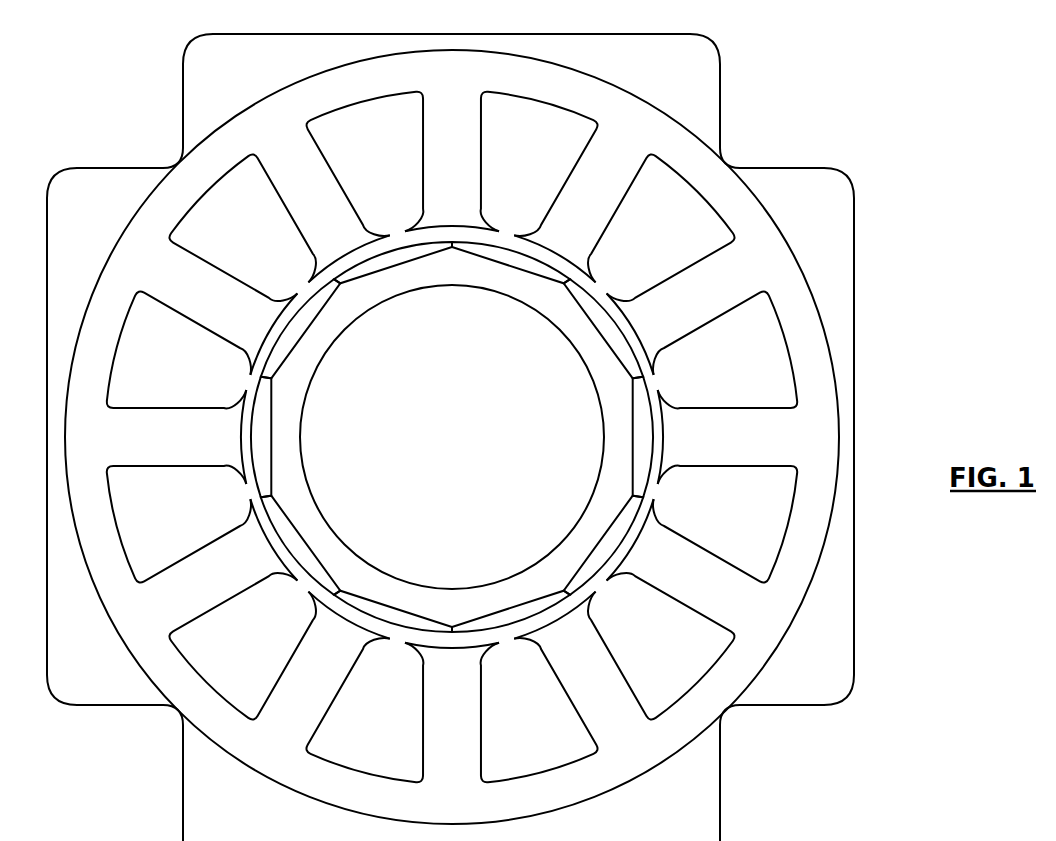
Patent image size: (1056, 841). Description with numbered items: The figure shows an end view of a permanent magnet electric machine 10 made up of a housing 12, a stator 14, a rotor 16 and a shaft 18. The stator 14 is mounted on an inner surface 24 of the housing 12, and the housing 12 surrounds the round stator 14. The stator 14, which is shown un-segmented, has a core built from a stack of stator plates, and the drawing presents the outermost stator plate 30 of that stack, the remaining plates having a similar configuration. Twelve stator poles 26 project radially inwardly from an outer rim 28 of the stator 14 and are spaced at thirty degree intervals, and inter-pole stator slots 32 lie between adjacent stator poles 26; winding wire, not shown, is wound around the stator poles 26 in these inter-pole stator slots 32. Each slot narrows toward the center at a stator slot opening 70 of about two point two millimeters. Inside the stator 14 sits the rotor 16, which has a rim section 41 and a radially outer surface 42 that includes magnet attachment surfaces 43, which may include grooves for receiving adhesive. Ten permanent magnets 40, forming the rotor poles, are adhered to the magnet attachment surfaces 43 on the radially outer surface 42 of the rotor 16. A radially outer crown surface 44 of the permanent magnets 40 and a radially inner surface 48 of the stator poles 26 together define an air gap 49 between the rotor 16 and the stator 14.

The electric machine 10 is at (806, 89).
The housing 12 is at (796, 227).
The stator 14 is at (632, 120).
The rotor 16 is at (490, 283).
The shaft 18 is at (434, 446).
The inner surface 24 is at (253, 107).
The stator poles 26 is at (443, 161).
The outer rim 28 is at (376, 82).
The outermost stator plate 30 is at (828, 415).
The inter-pole stator slots 32 is at (368, 164).
The permanent magnets 40 is at (380, 262).
The rim section 41 is at (606, 404).
The radially outer surface 42 is at (455, 245).
The magnet attachment surfaces 43 is at (302, 344).
The radially outer crown surface 44 is at (354, 266).
The radially inner surface 48 is at (333, 268).
The air gap 49 is at (588, 282).
The stator slot opening 70 is at (395, 222).